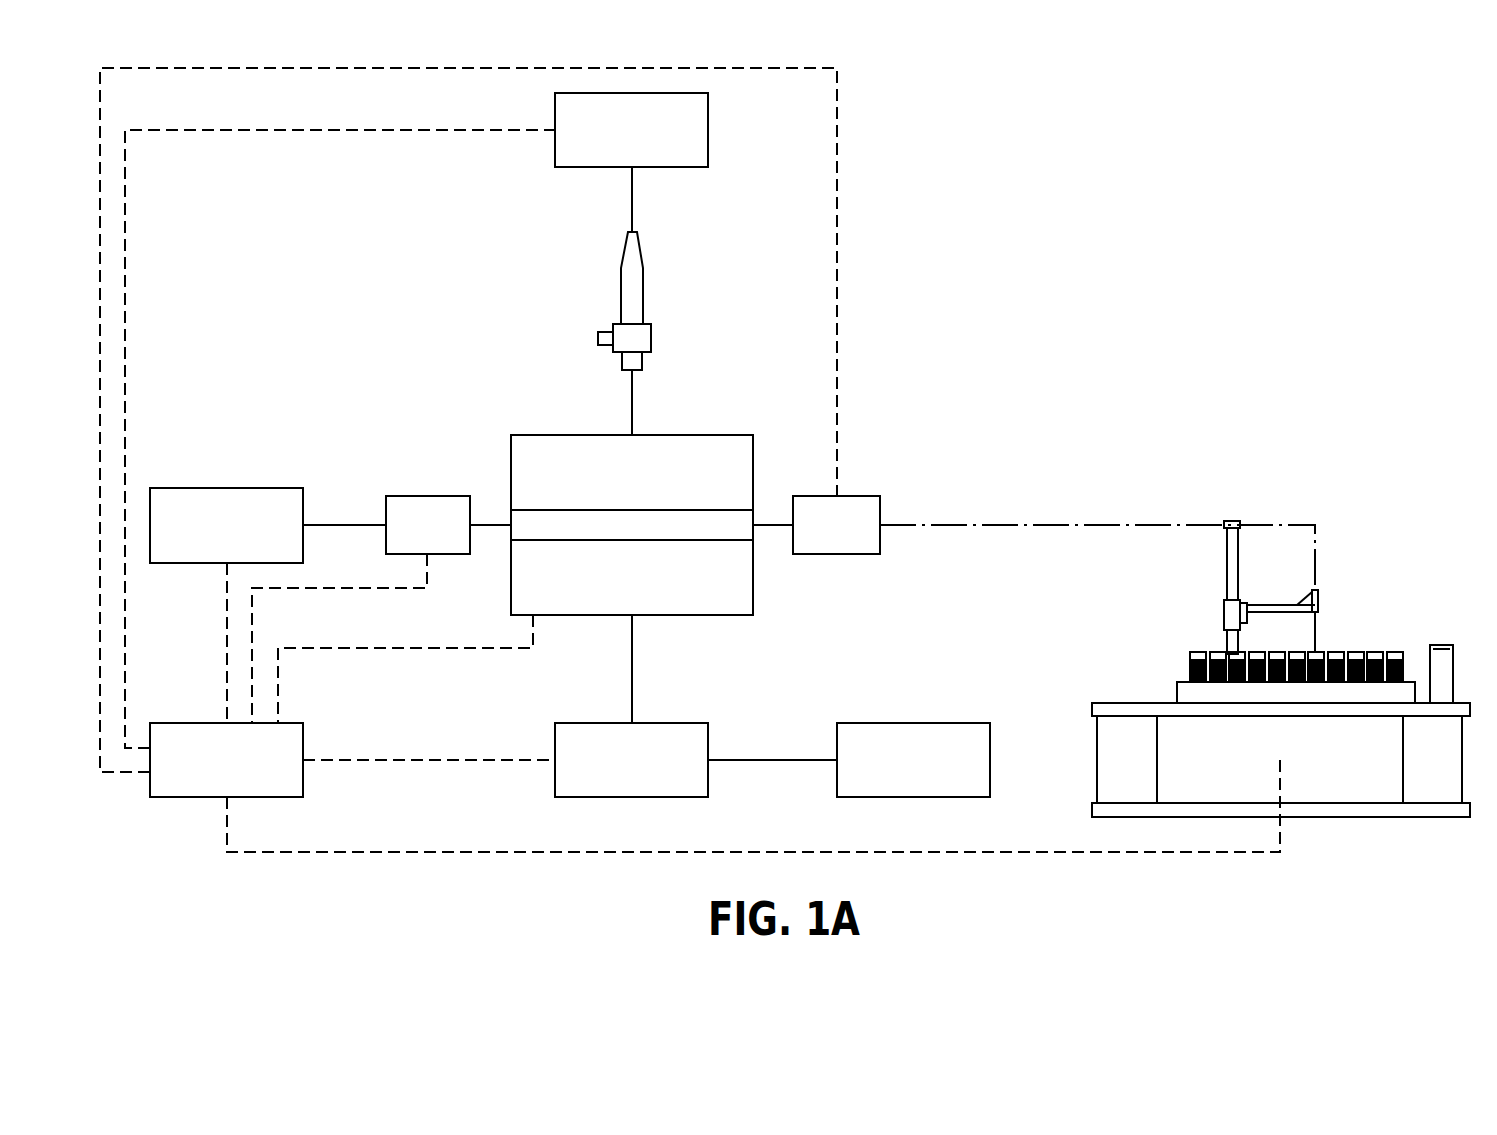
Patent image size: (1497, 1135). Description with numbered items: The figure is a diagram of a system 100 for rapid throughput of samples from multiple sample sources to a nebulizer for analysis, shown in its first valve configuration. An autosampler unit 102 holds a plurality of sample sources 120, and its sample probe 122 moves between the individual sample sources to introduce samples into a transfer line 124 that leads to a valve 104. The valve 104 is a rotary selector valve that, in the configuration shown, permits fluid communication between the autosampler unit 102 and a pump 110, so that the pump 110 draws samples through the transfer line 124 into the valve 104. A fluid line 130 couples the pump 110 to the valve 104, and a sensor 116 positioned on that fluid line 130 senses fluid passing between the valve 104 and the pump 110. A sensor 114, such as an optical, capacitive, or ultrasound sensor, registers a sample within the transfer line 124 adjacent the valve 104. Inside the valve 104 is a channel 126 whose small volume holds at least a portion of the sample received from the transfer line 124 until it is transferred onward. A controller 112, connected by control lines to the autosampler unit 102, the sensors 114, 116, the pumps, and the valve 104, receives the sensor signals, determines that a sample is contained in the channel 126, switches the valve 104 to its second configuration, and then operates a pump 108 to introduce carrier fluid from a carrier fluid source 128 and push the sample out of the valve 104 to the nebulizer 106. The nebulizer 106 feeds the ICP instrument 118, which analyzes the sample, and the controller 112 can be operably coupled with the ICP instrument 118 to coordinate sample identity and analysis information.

The system 100 is at (1182, 230).
The autosampler unit 102 is at (1283, 656).
The valve 104 is at (685, 549).
The nebulizer 106 is at (643, 297).
The pump 108 is at (670, 723).
The pump 110 is at (226, 488).
The controller 112 is at (188, 797).
The sensor 114 is at (880, 510).
The sensor 116 is at (428, 496).
The ICP instrument 118 is at (708, 130).
The plurality of sample sources 120 is at (1350, 636).
The sample probe 122 is at (1320, 622).
The transfer line 124 is at (1082, 525).
The channel 126 is at (745, 532).
The carrier fluid source 128 is at (912, 723).
The fluid line 130 is at (490, 525).